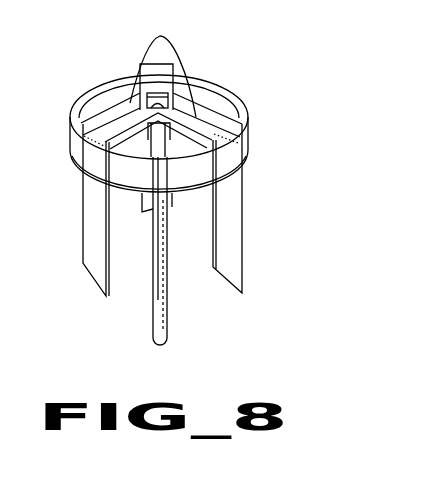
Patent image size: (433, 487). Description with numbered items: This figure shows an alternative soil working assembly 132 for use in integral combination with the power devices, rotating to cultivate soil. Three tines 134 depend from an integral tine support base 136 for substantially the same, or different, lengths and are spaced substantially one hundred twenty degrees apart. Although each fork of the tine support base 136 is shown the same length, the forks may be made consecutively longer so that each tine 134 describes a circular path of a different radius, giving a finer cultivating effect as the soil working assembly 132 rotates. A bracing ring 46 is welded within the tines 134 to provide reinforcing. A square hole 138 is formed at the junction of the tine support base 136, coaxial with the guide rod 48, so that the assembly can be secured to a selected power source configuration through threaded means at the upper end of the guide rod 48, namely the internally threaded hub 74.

The soil working assembly 132 is at (183, 184).
The bracing ring 46 is at (71, 111).
The internally threaded hub 74 is at (149, 143).
The tine 134 is at (83, 232).
The tine support base 136 is at (158, 75).
The square hole 138 is at (140, 112).
The guide rod 48 is at (162, 313).